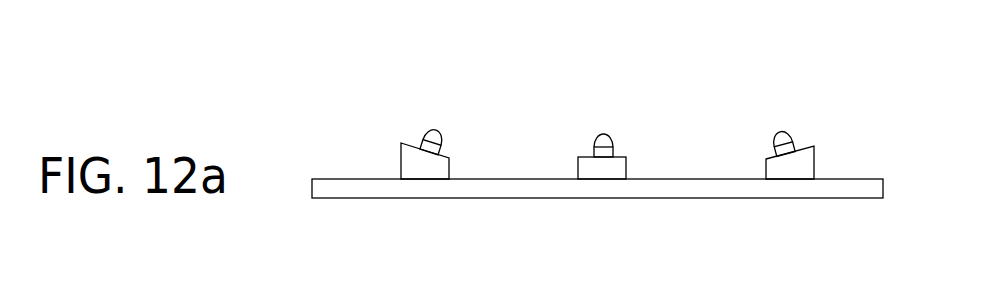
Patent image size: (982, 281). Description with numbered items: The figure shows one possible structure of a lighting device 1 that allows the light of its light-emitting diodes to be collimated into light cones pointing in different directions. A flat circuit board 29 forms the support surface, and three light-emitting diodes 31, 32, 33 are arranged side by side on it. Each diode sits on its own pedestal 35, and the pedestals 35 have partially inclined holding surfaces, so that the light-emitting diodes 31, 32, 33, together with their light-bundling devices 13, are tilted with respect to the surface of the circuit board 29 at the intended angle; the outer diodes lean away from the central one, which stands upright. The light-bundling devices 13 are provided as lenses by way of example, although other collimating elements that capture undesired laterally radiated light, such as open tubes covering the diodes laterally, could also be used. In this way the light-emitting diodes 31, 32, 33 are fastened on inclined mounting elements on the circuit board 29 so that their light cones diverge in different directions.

The lighting device 1 is at (327, 91).
The light-bundling device 13 is at (433, 128).
The circuit board 29 is at (693, 199).
The light-emitting diode 31 is at (416, 137).
The light-emitting diode 32 is at (592, 148).
The light-emitting diode 33 is at (798, 145).
The pedestal 35 is at (400, 162).